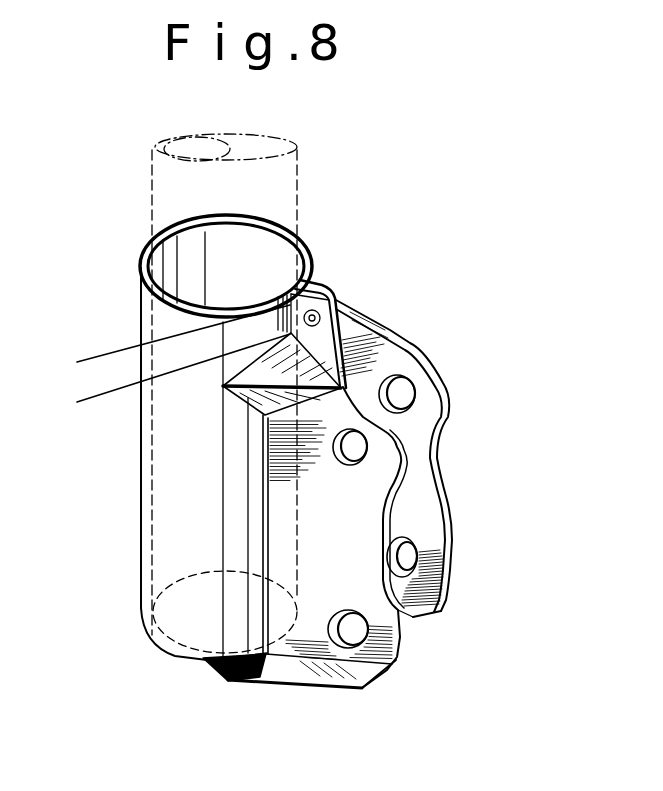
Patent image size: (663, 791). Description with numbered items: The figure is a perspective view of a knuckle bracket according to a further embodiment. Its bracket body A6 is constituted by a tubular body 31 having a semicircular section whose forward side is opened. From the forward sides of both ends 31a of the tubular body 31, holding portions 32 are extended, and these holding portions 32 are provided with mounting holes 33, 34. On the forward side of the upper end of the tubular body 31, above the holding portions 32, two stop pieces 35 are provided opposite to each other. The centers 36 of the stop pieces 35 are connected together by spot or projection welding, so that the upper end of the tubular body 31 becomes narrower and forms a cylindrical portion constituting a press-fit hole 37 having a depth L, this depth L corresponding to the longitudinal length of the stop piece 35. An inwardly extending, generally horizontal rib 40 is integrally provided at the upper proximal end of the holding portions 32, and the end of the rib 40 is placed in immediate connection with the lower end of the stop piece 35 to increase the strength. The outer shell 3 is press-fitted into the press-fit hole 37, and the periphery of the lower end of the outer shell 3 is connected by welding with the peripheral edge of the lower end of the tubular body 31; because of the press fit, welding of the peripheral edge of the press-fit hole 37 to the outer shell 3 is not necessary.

The outer shell 3 is at (158, 172).
The tubular body 31 is at (160, 552).
The ends of the tubular body 31a is at (267, 505).
The holding portion 32 is at (425, 487).
The mounting hole 33 is at (410, 412).
The mounting hole 34 is at (448, 557).
The stop piece 35 is at (292, 293).
The center of the stop piece 36 is at (347, 307).
The press-fit hole 37 is at (267, 247).
The rib 40 is at (342, 373).
The bracket body A6 is at (140, 449).
The depth L is at (88, 323).